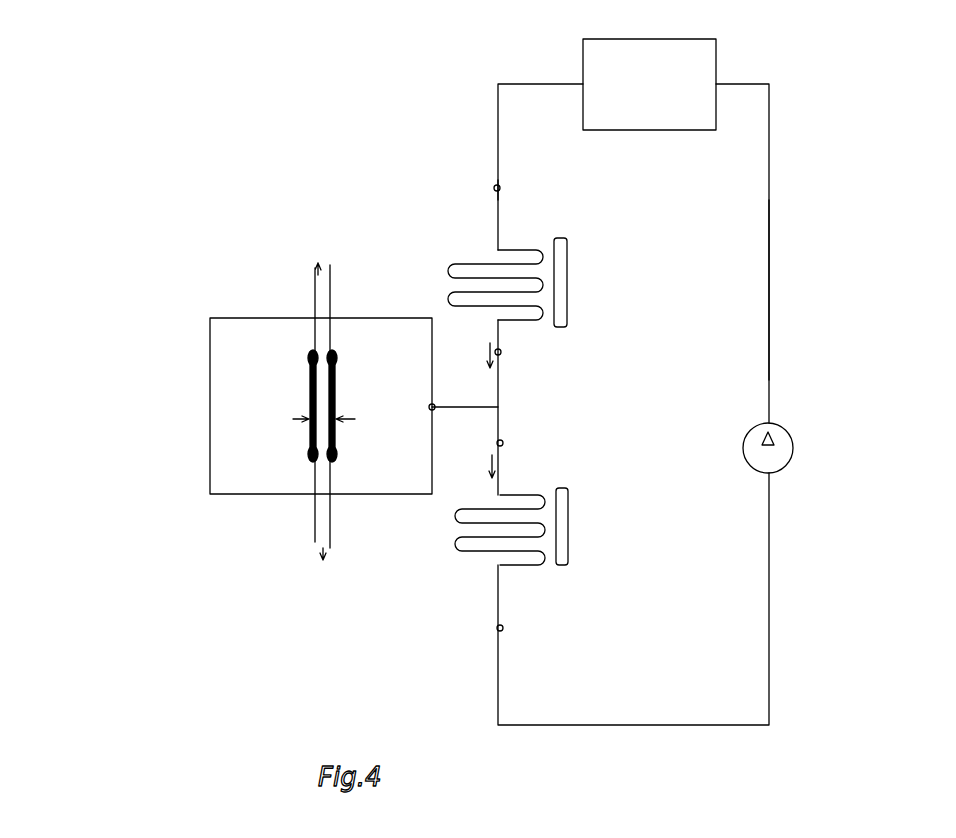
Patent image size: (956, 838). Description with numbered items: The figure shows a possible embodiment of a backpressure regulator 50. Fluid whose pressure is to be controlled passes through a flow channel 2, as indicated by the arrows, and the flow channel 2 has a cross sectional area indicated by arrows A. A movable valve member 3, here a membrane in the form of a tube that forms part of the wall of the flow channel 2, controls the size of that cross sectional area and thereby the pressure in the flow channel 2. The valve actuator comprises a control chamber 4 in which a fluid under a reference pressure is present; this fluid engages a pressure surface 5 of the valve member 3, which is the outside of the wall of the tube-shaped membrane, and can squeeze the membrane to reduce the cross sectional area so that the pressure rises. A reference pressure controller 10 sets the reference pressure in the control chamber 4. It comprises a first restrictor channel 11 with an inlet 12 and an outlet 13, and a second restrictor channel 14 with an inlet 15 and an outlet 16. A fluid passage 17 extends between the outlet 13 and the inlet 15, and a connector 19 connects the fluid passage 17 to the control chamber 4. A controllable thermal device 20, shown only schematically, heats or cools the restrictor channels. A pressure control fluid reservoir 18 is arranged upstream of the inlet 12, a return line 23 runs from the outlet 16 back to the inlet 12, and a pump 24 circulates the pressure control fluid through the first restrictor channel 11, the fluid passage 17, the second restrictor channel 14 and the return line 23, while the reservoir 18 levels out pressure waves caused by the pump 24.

The backpressure regulator 50 is at (139, 295).
The reference pressure controller 10 is at (619, 362).
The pressure control fluid reservoir 18 is at (675, 39).
The inlet 12 is at (494, 187).
The first restrictor channel 11 is at (498, 198).
The return line 23 is at (770, 278).
The pump 24 is at (794, 449).
The fluid passage 17 is at (499, 389).
The controllable thermal device 20 is at (568, 262).
The outlet 13 is at (504, 352).
The connector 19 is at (458, 412).
The inlet 15 is at (503, 442).
The second restrictor channel 14 is at (504, 470).
The outlet 16 is at (504, 628).
The control chamber 4 is at (249, 478).
The flow channel 2 is at (323, 335).
The pressure surface 5 is at (331, 402).
The cross sectional area A is at (332, 419).
The movable valve member 3 is at (313, 402).